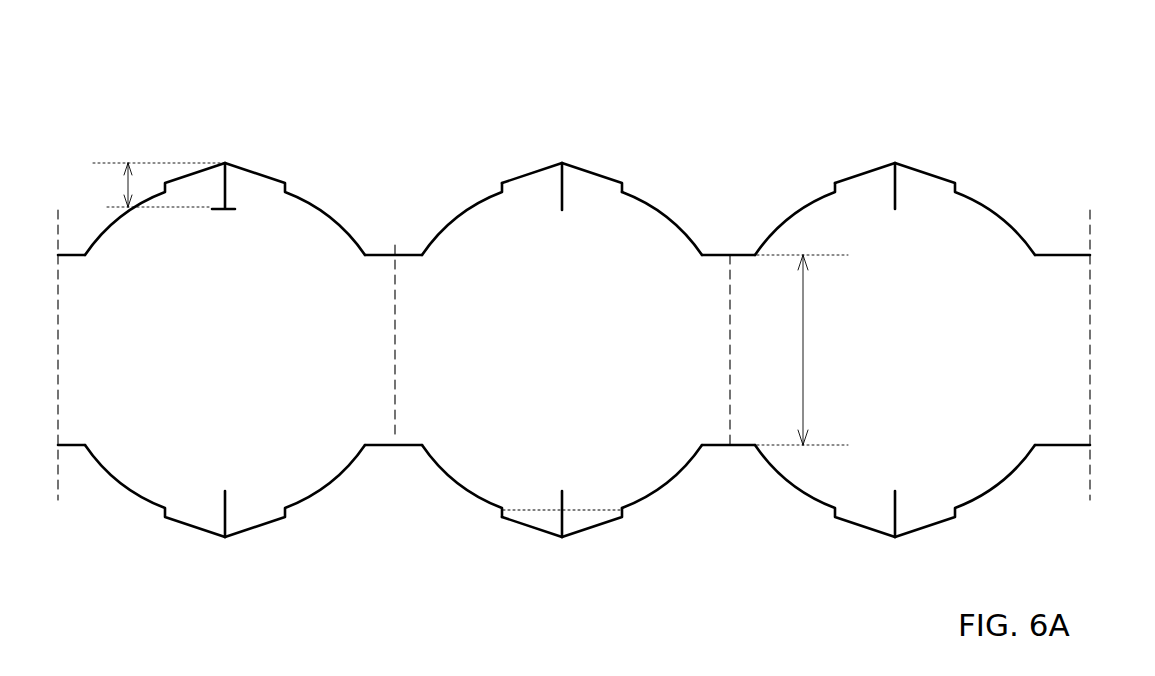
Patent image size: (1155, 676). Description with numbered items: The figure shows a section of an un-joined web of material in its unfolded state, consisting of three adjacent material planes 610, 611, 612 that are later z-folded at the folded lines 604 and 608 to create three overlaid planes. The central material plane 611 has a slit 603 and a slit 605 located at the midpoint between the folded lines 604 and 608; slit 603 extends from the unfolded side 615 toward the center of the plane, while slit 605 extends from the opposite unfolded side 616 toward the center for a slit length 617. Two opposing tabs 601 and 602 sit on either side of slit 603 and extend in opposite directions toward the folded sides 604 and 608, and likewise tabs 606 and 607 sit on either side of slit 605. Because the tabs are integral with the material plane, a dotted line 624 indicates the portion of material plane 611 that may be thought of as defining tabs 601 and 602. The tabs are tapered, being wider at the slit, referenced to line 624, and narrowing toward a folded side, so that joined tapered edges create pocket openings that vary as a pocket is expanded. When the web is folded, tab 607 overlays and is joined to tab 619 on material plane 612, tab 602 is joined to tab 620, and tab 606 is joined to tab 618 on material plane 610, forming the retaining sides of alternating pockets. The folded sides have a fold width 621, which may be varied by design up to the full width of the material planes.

The tab 601 is at (513, 165).
The tab 602 is at (593, 165).
The slit 603 is at (563, 210).
The folded line 604 is at (395, 247).
The slit 605 is at (563, 515).
The tab 606 is at (518, 538).
The tab 607 is at (607, 532).
The folded line 608 is at (728, 247).
The material plane 610 is at (225, 375).
The material plane 611 is at (549, 342).
The material plane 612 is at (895, 356).
The unfolded side 615 is at (480, 200).
The unfolded side 616 is at (443, 480).
The slit length 617 is at (150, 175).
The tab 618 is at (250, 527).
The tab 619 is at (872, 540).
The tab 620 is at (873, 165).
The fold width 621 is at (828, 318).
The dotted line 624 is at (587, 512).